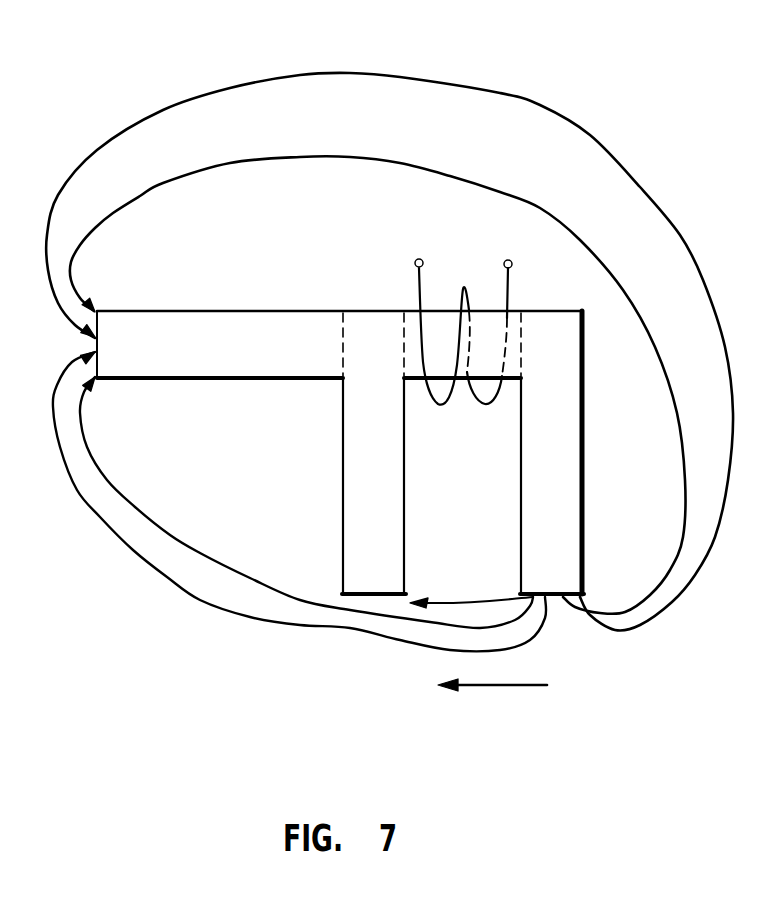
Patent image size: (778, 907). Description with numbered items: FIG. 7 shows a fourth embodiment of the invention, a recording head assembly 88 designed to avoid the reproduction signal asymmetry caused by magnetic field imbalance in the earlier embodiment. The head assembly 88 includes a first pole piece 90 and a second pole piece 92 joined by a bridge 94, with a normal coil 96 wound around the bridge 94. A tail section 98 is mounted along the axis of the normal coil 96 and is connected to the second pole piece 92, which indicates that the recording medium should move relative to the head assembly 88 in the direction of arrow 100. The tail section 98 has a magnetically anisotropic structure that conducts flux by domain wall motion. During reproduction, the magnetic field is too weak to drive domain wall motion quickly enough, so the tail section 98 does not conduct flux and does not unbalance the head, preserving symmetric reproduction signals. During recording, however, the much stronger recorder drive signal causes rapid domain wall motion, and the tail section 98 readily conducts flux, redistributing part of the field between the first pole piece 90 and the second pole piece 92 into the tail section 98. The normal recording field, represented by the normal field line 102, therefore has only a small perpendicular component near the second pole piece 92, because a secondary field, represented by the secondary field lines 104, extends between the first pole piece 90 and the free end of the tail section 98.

The recording head assembly 88 is at (627, 112).
The first pole piece 90 is at (585, 522).
The second pole piece 92 is at (343, 475).
The bridge 94 is at (412, 310).
The normal coil 96 is at (510, 278).
The tail section 98 is at (129, 310).
The arrow 100 is at (501, 688).
The normal field line 102 is at (445, 603).
The secondary field lines 104 is at (190, 173).